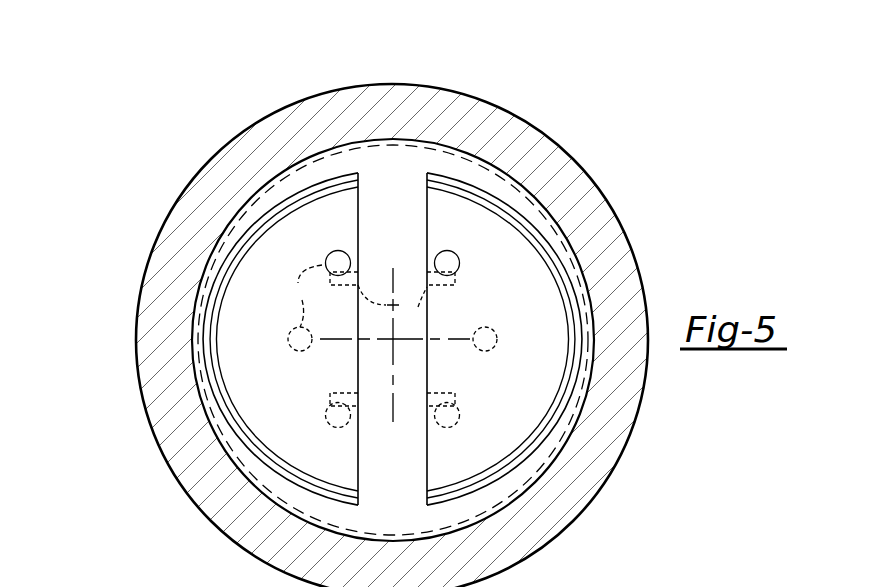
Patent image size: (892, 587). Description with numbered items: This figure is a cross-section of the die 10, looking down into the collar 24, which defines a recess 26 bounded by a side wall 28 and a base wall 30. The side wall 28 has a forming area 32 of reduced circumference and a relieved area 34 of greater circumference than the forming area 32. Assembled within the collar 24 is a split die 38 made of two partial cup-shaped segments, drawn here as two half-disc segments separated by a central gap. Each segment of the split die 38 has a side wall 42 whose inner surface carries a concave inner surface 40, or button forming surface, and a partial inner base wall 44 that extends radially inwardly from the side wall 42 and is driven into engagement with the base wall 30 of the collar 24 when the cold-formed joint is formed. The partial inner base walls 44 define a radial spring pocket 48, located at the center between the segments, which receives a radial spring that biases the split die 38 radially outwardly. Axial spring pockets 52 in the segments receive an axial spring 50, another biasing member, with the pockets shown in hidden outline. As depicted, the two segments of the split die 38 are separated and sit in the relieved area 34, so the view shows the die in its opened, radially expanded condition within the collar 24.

The die 10 is at (578, 148).
The collar 24 is at (446, 293).
The recess 26 is at (249, 475).
The side wall 28 is at (603, 433).
The base wall 30 is at (445, 240).
The forming area 32 is at (473, 490).
The relieved area 34 is at (506, 494).
The split die 38 is at (392, 339).
The concave inner surface 40 is at (250, 440).
The side wall 42 is at (504, 339).
The partial inner base wall 44 is at (256, 354).
The radial spring pocket 48 is at (395, 345).
The axial spring 50 is at (443, 258).
The axial spring pocket 52 is at (303, 296).